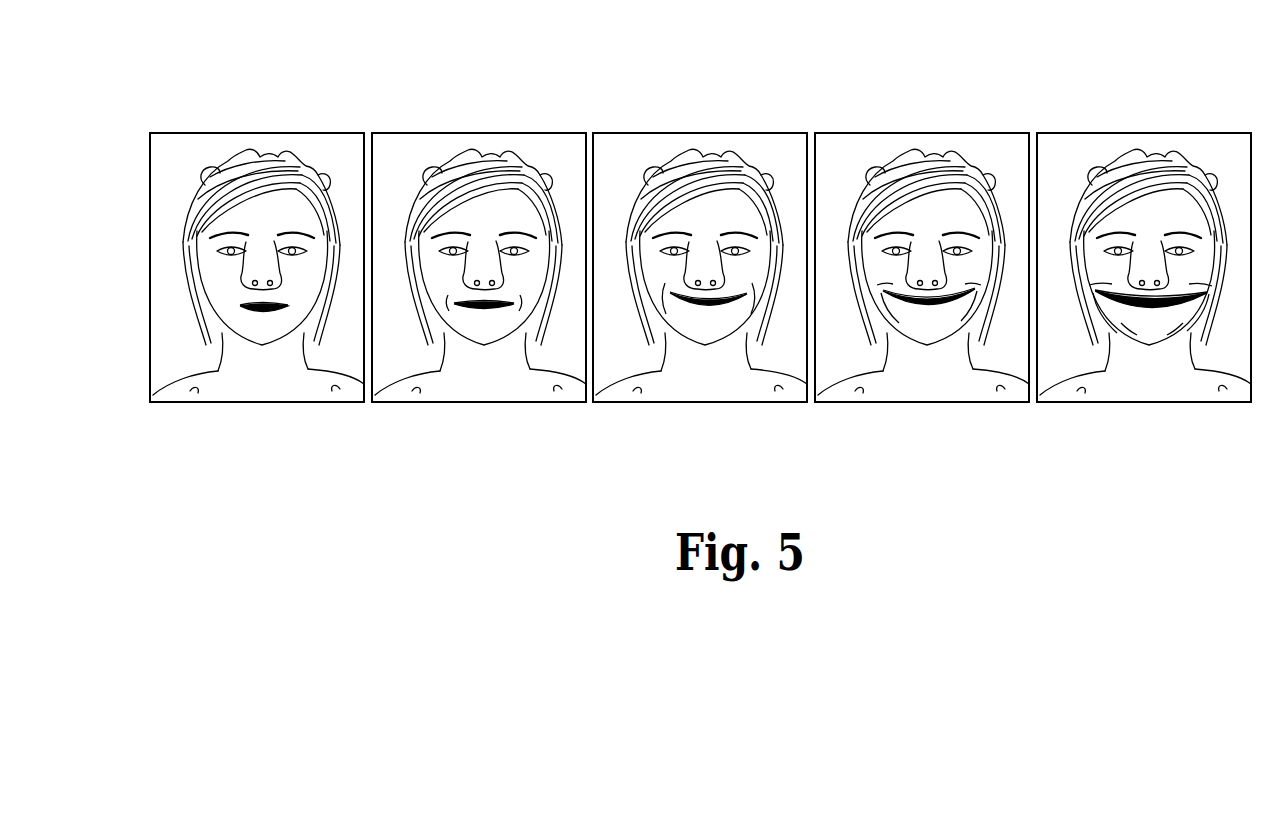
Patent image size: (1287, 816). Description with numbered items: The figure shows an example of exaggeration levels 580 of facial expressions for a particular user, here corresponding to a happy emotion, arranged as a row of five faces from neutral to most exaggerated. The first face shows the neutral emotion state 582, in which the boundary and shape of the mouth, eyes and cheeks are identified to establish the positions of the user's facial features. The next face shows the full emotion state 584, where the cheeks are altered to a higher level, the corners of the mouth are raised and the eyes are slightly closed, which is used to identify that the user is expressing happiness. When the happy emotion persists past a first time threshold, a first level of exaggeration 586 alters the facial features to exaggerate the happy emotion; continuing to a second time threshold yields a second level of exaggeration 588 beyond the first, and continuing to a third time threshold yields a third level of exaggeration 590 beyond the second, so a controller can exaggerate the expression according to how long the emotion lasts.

The exaggeration levels 580 is at (1070, 56).
The neutral emotion state 582 is at (257, 290).
The full emotion state 584 is at (479, 290).
The first level of exaggeration 586 is at (700, 290).
The second level of exaggeration 588 is at (922, 290).
The third level of exaggeration 590 is at (1144, 290).